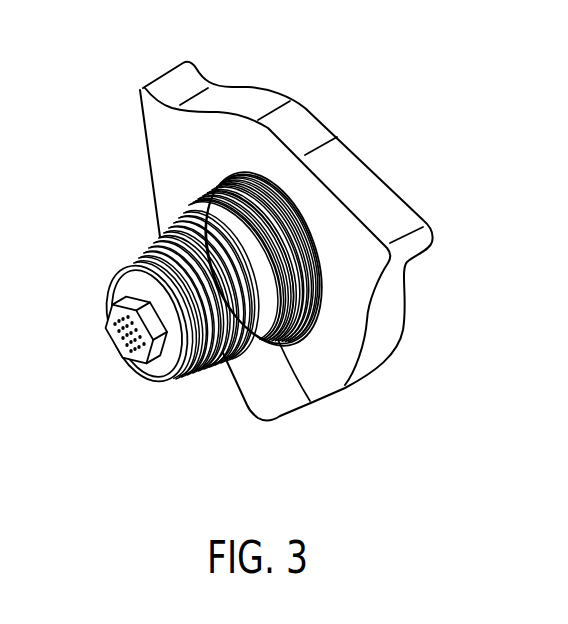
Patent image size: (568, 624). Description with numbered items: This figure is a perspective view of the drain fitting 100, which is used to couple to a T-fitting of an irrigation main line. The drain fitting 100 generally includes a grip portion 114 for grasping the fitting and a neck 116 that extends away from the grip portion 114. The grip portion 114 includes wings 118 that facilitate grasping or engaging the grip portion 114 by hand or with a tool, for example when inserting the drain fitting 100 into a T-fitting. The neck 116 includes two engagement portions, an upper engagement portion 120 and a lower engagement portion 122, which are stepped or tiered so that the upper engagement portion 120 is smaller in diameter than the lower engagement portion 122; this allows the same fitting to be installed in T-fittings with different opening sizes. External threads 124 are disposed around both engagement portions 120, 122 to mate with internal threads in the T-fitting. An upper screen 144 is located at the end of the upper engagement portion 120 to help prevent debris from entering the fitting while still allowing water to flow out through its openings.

The drain fitting 100 is at (470, 158).
The grip portion 114 is at (402, 344).
The neck 116 is at (105, 212).
The wings 118 is at (166, 72).
The upper engagement portion 120 is at (112, 258).
The lower engagement portion 122 is at (189, 205).
The external threads 124 is at (190, 370).
The upper screen 144 is at (107, 355).